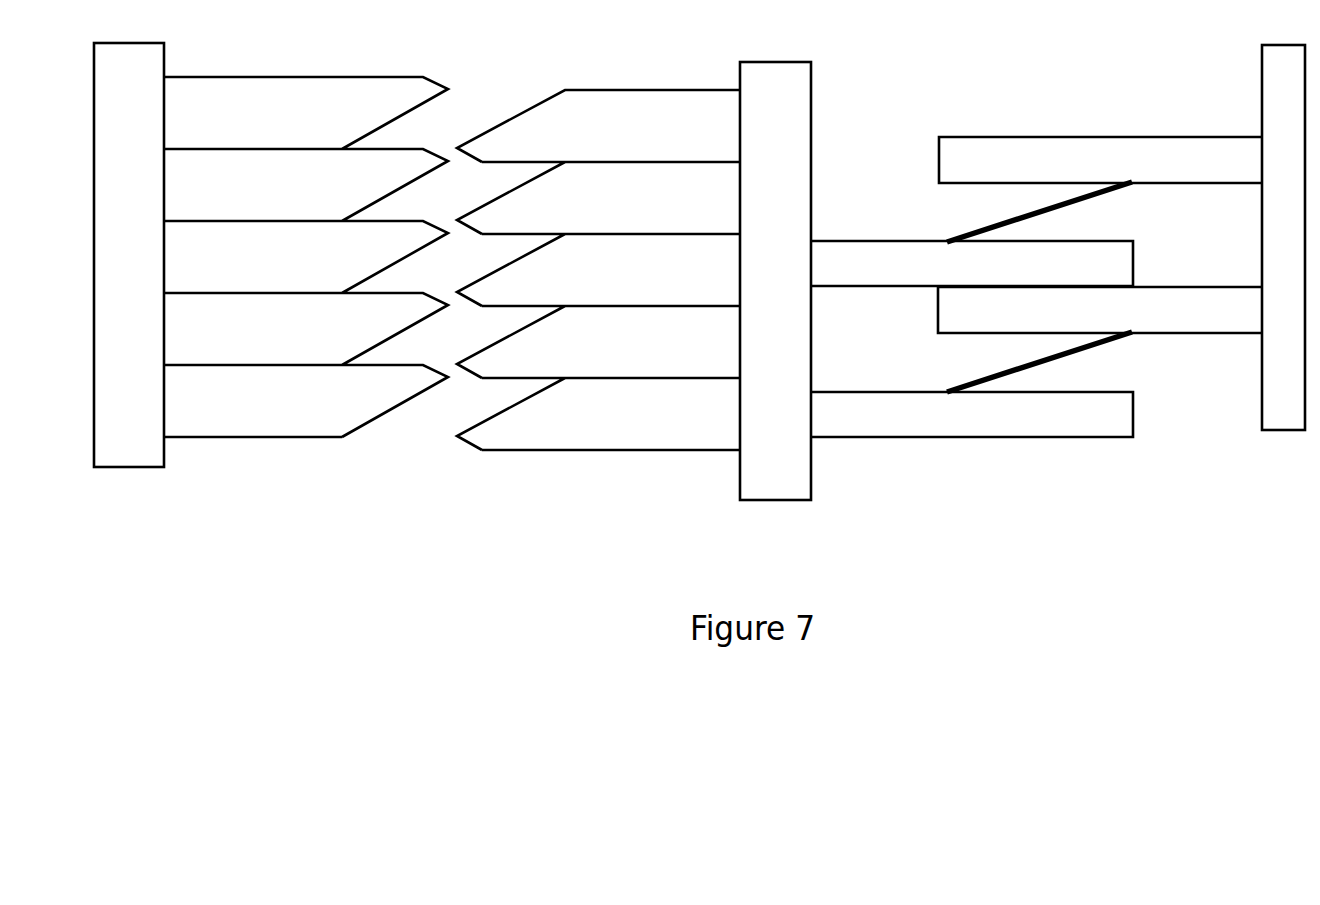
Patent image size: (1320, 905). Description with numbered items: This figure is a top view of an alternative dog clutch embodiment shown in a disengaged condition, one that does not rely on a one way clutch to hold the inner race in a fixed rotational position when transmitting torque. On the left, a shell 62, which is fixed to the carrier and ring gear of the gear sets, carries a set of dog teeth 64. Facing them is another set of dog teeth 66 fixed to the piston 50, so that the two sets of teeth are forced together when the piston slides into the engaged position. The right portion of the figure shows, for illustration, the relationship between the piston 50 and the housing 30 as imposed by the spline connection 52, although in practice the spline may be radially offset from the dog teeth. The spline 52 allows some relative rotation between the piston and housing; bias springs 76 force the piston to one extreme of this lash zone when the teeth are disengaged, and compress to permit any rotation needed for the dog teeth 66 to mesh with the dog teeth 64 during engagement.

The transmission case 30 is at (1298, 428).
The piston 50 is at (936, 281).
The splines 52 is at (1071, 482).
The shell 62 is at (129, 255).
The dog teeth 64 is at (306, 257).
The dog teeth 66 is at (598, 270).
The bias springs 76 is at (973, 230).